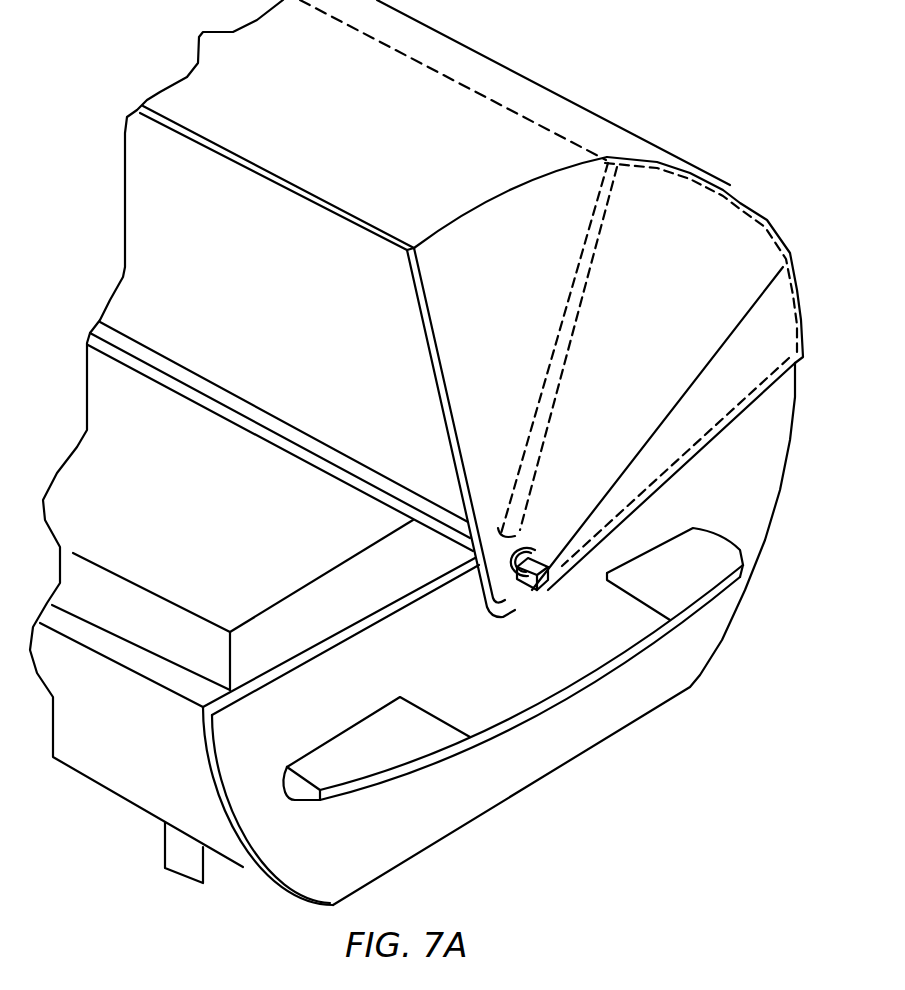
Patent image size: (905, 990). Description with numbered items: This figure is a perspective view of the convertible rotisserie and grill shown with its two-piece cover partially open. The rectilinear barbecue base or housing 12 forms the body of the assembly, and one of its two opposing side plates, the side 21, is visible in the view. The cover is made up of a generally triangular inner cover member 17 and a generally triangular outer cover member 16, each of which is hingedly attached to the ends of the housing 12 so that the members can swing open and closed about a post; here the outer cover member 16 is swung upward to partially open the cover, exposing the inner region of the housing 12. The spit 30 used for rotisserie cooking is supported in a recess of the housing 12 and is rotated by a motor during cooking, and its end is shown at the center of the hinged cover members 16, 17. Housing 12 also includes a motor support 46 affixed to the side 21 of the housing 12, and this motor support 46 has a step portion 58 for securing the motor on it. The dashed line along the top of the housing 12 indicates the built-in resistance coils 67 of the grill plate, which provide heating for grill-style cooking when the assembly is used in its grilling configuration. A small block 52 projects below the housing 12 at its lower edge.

The housing 12 is at (596, 752).
The outer cover member 16 is at (530, 275).
The inner cover member 17 is at (727, 187).
The side plate 21 is at (739, 495).
The spit 30 is at (517, 615).
The motor support 46 is at (380, 783).
The mounting leg 52 is at (190, 868).
The step portion 58 is at (490, 720).
The resistance coils 67 is at (470, 110).